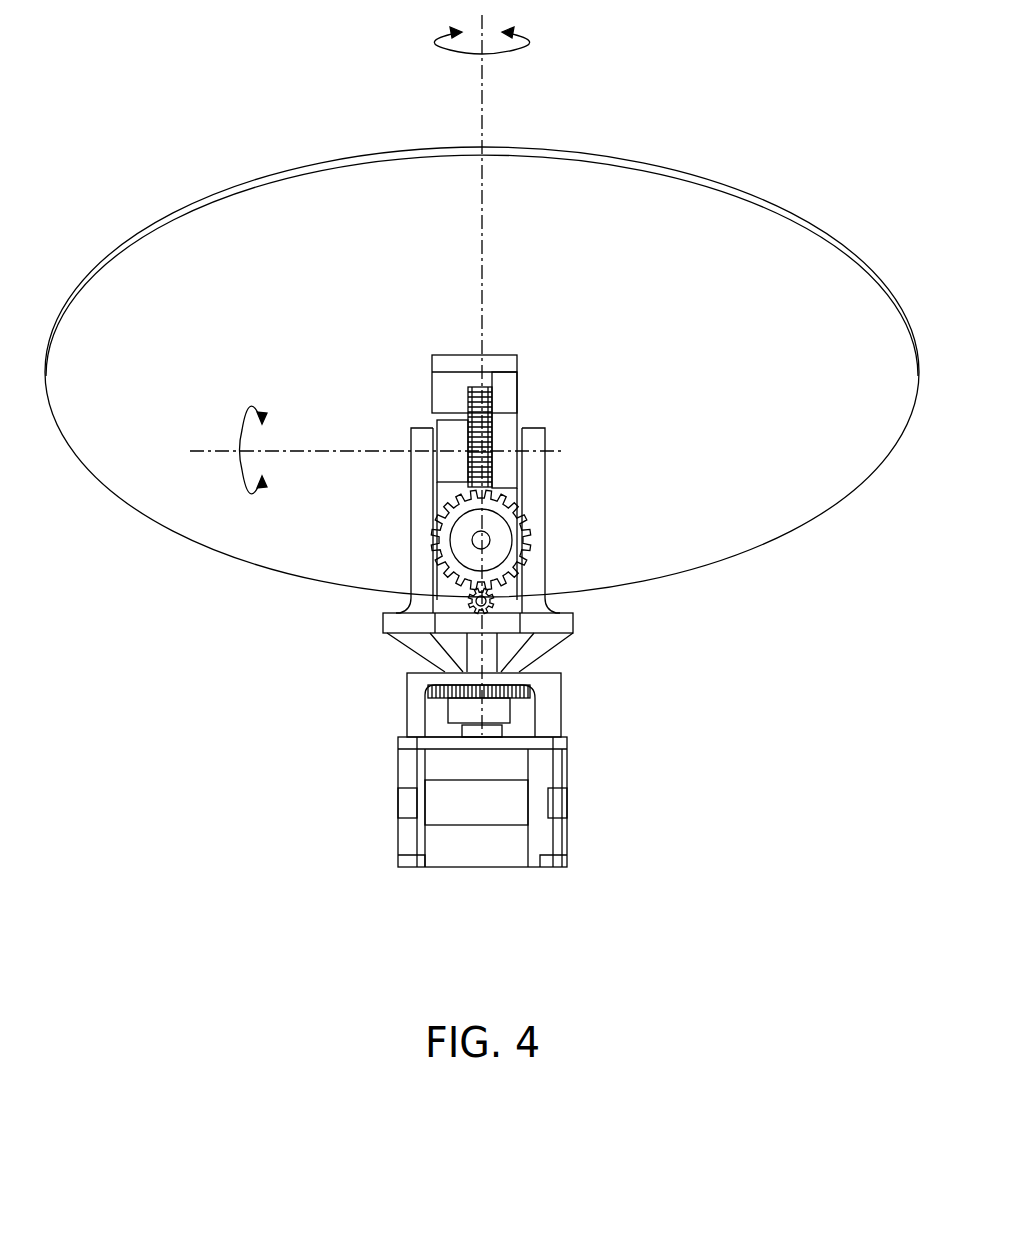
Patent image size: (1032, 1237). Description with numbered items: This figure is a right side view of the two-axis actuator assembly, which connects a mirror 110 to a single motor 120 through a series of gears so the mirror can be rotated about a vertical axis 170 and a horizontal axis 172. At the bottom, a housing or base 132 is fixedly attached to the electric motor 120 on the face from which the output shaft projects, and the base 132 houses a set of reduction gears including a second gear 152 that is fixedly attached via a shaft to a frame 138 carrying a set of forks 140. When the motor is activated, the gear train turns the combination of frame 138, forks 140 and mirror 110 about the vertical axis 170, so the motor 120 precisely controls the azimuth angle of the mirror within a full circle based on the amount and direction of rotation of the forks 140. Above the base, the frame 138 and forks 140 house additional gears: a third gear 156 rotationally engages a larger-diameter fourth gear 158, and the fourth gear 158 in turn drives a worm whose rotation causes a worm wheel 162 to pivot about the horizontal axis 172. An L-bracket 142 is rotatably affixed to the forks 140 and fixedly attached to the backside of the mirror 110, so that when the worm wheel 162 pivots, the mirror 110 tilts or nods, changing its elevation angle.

The mirror 110 is at (241, 178).
The motor 120 is at (568, 809).
The housing or base 132 is at (547, 710).
The frame 138 is at (558, 626).
The forks 140 is at (535, 481).
The L-bracket 142 is at (490, 365).
The second gear 152 is at (428, 690).
The third gear 156 is at (495, 603).
The fourth gear 158 is at (512, 532).
The worm wheel 162 is at (490, 407).
The vertical axis 170 is at (483, 125).
The horizontal axis 172 is at (222, 450).